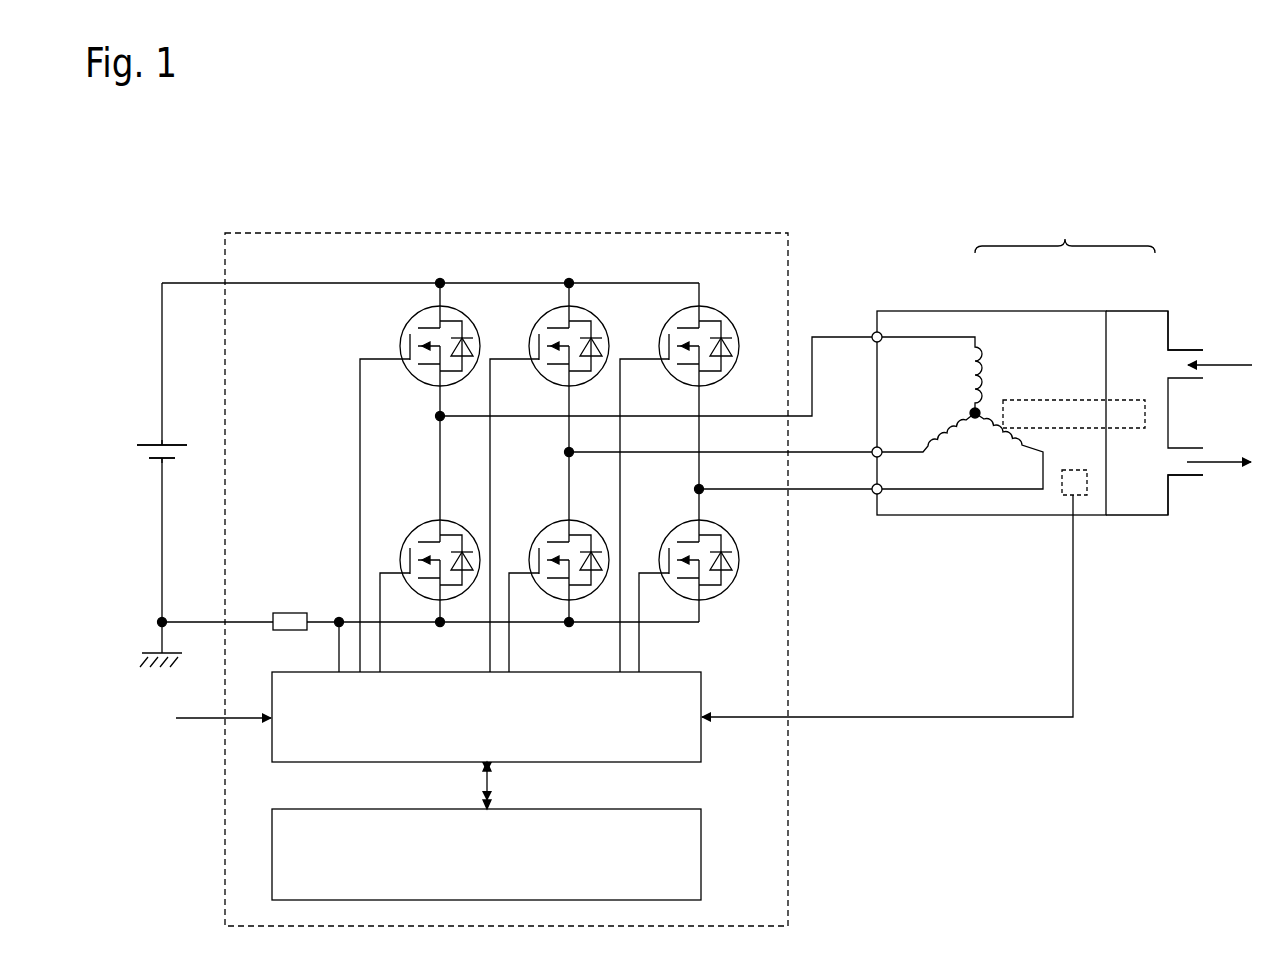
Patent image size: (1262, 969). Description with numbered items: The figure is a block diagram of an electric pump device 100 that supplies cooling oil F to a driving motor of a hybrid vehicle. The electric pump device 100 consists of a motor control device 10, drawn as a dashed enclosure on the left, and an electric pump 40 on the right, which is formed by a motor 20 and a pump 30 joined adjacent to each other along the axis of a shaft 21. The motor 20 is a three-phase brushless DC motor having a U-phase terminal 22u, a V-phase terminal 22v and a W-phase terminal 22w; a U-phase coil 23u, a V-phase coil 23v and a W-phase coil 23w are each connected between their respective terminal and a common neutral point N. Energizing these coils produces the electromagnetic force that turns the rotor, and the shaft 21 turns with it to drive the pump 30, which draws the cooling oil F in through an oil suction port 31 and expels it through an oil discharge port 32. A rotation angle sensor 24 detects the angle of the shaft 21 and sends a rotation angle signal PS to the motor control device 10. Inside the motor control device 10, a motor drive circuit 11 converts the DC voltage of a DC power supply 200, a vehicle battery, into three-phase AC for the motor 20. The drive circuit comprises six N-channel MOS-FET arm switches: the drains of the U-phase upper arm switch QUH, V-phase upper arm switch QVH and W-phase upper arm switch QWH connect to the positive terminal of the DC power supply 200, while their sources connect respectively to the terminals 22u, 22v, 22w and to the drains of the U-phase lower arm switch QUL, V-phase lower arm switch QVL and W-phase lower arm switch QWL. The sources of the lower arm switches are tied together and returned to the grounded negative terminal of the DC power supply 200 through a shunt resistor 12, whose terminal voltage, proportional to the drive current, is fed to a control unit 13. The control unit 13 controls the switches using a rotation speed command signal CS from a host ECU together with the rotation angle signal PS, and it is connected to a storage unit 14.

The motor control device 10 is at (738, 233).
The motor drive circuit 11 is at (697, 457).
The shunt resistor 12 is at (293, 612).
The control unit 13 is at (650, 672).
The storage unit 14 is at (650, 809).
The motor 20 is at (993, 311).
The shaft 21 is at (1131, 399).
The U-phase terminal 22u is at (872, 333).
The V-phase terminal 22v is at (872, 448).
The W-phase terminal 22w is at (872, 485).
The U-phase coil 23u is at (980, 362).
The V-phase coil 23v is at (928, 445).
The W-phase coil 23w is at (1020, 456).
The rotation angle sensor 24 is at (1062, 484).
The pump 30 is at (1138, 311).
The oil suction port 31 is at (1187, 349).
The oil discharge port 32 is at (1187, 478).
The electric pump 40 is at (1065, 232).
The electric pump device 100 is at (1090, 745).
The DC power supply 200 is at (170, 445).
The neutral point N is at (972, 410).
The cooling oil F is at (1231, 363).
The rotation speed command signal CS is at (211, 718).
The rotation angle signal PS is at (917, 716).
The U-phase upper arm switch QUH is at (405, 352).
The V-phase upper arm switch QVH is at (534, 352).
The W-phase upper arm switch QWH is at (679, 482).
The U-phase lower arm switch QUL is at (405, 567).
The V-phase lower arm switch QVL is at (534, 567).
The W-phase lower arm switch QWL is at (665, 567).